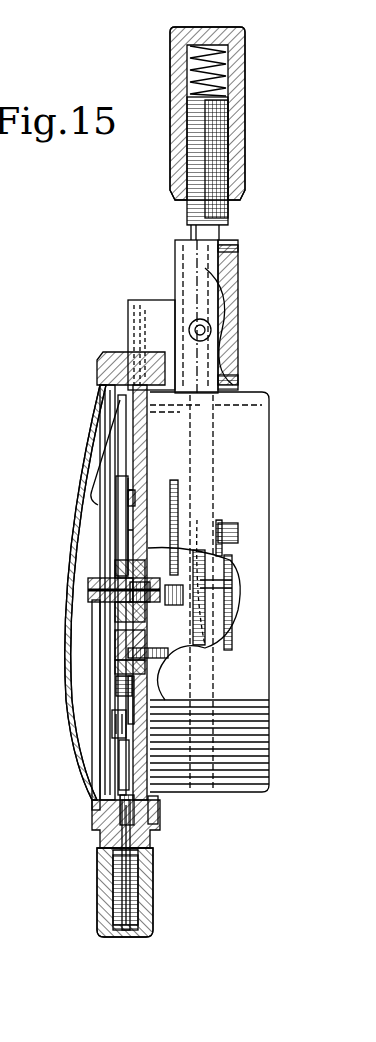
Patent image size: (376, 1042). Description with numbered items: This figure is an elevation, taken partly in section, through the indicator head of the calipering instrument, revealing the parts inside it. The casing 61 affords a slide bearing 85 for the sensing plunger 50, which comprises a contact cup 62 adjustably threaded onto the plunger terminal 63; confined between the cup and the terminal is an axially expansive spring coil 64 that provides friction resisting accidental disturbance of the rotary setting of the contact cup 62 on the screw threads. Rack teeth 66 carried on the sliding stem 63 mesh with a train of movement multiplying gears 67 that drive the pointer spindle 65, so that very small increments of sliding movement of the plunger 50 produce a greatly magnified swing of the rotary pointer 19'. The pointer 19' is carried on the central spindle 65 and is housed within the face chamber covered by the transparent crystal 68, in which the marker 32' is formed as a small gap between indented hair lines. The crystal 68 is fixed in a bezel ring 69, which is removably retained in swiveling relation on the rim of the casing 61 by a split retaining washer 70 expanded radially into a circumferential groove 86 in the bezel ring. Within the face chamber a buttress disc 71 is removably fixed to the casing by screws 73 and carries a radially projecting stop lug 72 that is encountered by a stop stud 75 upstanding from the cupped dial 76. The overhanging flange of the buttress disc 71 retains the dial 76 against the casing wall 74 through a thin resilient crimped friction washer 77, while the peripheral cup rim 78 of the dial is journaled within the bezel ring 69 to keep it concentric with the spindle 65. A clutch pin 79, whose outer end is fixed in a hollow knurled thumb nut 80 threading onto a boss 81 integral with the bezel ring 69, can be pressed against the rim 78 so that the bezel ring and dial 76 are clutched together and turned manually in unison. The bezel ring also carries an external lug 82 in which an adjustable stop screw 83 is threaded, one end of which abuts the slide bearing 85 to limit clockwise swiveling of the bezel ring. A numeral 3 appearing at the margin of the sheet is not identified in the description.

The case 3 is at (2, 442).
The rotary pointer 19' is at (76, 592).
The marker 32' is at (69, 452).
The sensing plunger 50 is at (153, 179).
The casing 61 is at (209, 592).
The contact cup 62 is at (170, 55).
The plunger terminal 63 is at (193, 232).
The spring coil 64 is at (218, 78).
The pointer spindle 65 is at (92, 590).
The rack teeth 66 is at (200, 550).
The movement multiplying gears 67 is at (238, 545).
The crystal 68 is at (66, 660).
The bezel ring 69 is at (100, 815).
The split retaining washer 70 is at (160, 810).
The buttress disc 71 is at (127, 700).
The stop lug 72 is at (115, 722).
The screws 73 is at (118, 684).
The casing wall 74 is at (150, 665).
The stop stud 75 is at (125, 750).
The dial 76 is at (130, 440).
The friction washer 77 is at (130, 478).
The cup rim 78 is at (138, 360).
The clutch pin 79 is at (140, 838).
The knurled thumb nut 80 is at (150, 890).
The boss 81 is at (112, 850).
The external lug 82 is at (150, 312).
The adjustable stop screw 83 is at (195, 322).
The slide bearing 85 is at (195, 252).
The circumferential groove 86 is at (135, 352).